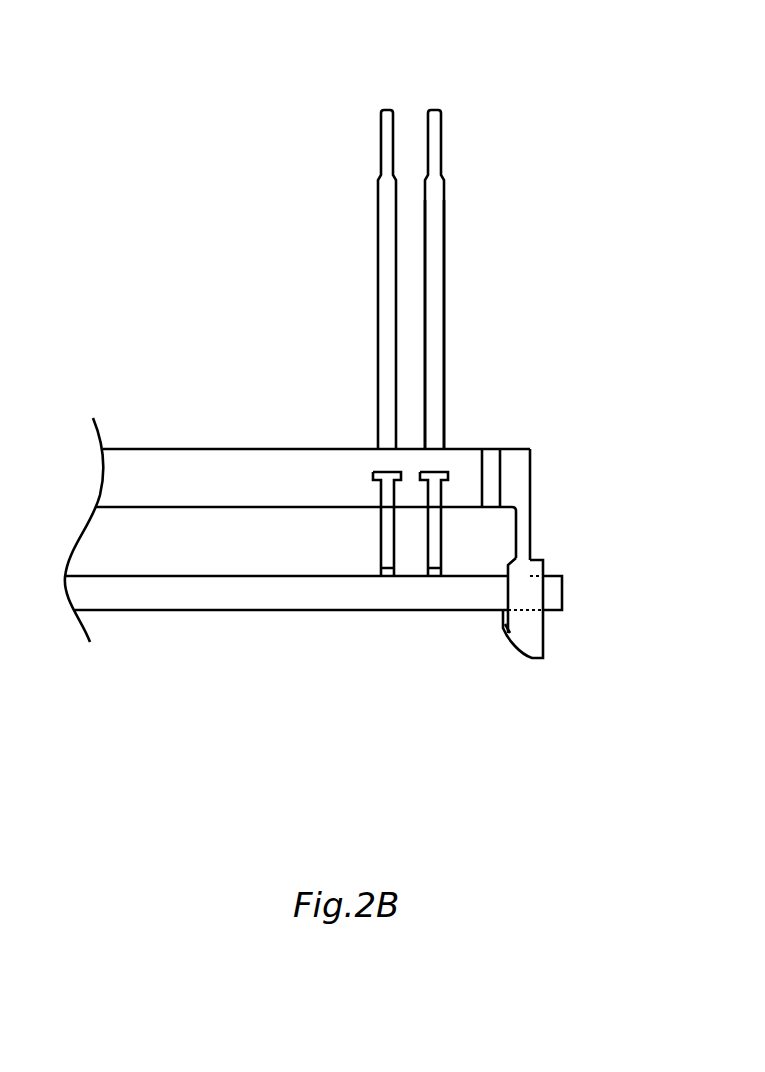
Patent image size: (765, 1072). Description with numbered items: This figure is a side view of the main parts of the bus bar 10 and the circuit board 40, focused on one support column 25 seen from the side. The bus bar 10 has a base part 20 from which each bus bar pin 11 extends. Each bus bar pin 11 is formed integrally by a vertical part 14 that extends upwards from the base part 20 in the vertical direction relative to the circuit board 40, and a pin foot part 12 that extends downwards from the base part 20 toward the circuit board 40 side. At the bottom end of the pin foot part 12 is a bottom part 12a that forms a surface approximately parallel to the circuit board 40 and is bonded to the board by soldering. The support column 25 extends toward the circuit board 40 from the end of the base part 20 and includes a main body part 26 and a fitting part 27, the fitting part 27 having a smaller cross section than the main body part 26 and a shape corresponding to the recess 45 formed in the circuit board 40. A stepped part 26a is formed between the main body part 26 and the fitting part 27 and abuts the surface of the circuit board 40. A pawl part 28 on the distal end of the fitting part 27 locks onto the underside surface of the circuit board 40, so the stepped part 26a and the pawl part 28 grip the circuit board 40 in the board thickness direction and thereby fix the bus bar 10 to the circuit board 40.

The bus bar 10 is at (282, 333).
The bus bar pin 11 is at (386, 108).
The vertical part 14 is at (445, 235).
The base part 20 is at (202, 472).
The pin foot part 12 is at (436, 498).
The bottom part 12a is at (433, 577).
The support column 25 is at (537, 466).
The main body part 26 is at (523, 537).
The stepped part 26a is at (515, 575).
The fitting part 27 is at (538, 660).
The pawl part 28 is at (510, 645).
The circuit board 40 is at (203, 598).
The recess 45 is at (533, 593).